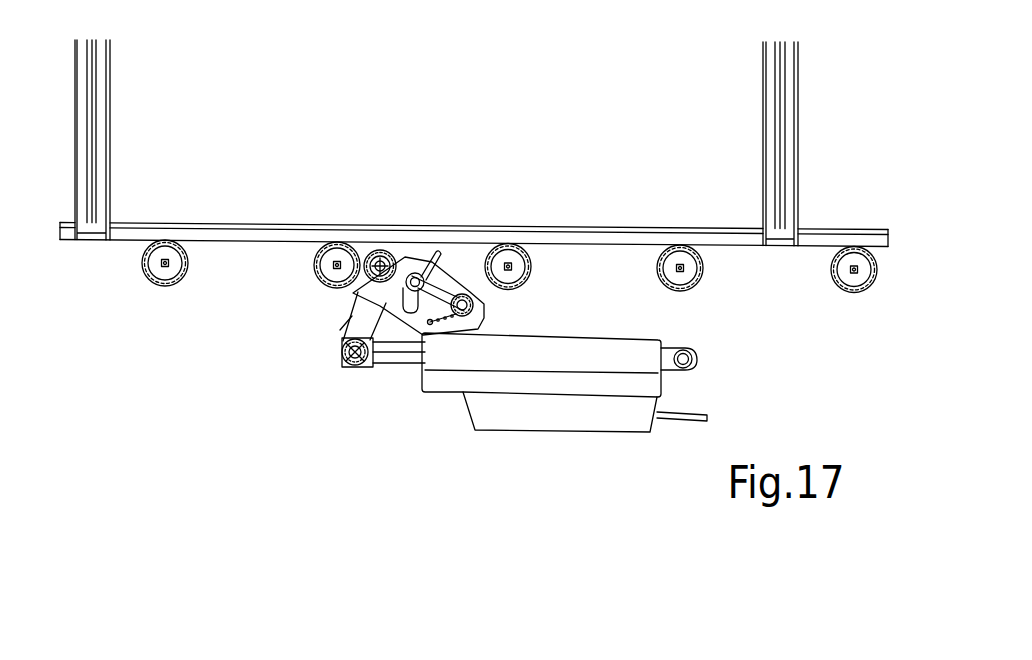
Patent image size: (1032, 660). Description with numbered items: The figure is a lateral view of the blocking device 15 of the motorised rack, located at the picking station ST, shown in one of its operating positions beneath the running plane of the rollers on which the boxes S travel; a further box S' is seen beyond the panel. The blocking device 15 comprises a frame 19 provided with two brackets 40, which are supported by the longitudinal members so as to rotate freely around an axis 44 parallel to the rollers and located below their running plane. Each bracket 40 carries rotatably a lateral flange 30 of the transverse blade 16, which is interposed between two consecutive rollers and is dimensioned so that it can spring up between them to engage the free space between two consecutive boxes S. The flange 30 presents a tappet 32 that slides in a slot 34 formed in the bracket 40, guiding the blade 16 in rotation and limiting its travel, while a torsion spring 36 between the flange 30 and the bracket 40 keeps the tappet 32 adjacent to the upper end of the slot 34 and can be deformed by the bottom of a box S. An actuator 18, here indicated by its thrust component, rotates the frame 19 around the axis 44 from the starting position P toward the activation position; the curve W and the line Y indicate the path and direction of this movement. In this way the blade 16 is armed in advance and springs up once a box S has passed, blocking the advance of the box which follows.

The blocking device 15 is at (496, 485).
The transverse blade 16 is at (430, 266).
The actuator 18 is at (400, 370).
The frame 19 is at (345, 322).
The lateral flange 30 is at (466, 296).
The tappet 32 is at (352, 293).
The slot 34 is at (335, 352).
The torsion spring 36 is at (495, 326).
The bracket 40 is at (378, 300).
The axis 44 is at (370, 243).
The box S is at (727, 163).
The adjacent shutter panel S' is at (834, 163).
The starting position P is at (437, 207).
The path W is at (475, 306).
The axis Y is at (392, 298).
The picking station ST is at (575, 512).